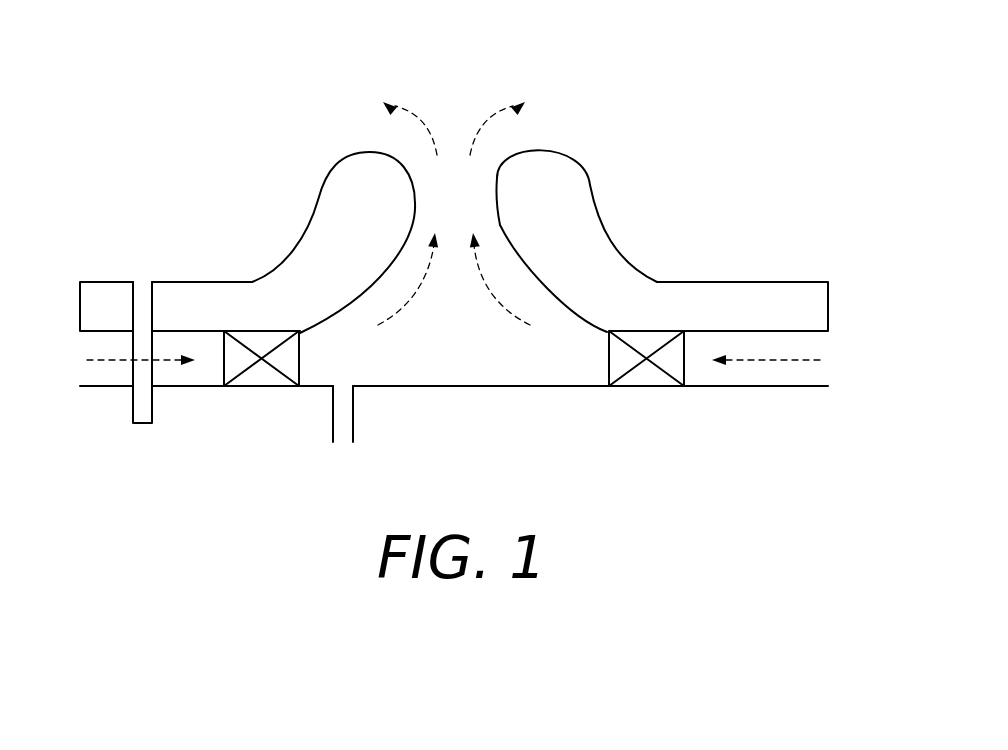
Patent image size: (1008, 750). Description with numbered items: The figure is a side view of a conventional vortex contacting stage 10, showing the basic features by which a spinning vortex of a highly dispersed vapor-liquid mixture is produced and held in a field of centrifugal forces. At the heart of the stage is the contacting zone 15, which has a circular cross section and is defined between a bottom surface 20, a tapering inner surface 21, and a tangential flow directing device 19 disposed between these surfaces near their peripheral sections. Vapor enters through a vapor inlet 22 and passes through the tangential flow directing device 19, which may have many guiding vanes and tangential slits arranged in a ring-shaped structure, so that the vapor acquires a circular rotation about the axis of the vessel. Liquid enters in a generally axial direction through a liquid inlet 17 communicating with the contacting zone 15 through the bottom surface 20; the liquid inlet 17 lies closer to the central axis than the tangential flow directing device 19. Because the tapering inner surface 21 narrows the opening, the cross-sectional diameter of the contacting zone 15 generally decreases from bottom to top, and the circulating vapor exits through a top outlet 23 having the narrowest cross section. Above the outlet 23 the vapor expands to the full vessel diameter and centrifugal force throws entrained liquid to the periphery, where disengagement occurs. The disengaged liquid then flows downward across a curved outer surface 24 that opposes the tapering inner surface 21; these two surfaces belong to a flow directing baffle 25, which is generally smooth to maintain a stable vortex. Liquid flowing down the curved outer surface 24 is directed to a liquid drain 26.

The vortex contacting stage 10 is at (800, 57).
The contacting zone 15 is at (470, 319).
The liquid inlet 17 is at (343, 430).
The tangential flow directing device 19 is at (647, 386).
The bottom surface 20 is at (433, 387).
The tapering inner surface 21 is at (415, 205).
The vapor inlet 22 is at (112, 377).
The top outlet 23 is at (400, 145).
The curved outer surface 24 is at (310, 220).
The flow directing baffle 25 is at (360, 249).
The liquid drain 26 is at (140, 292).